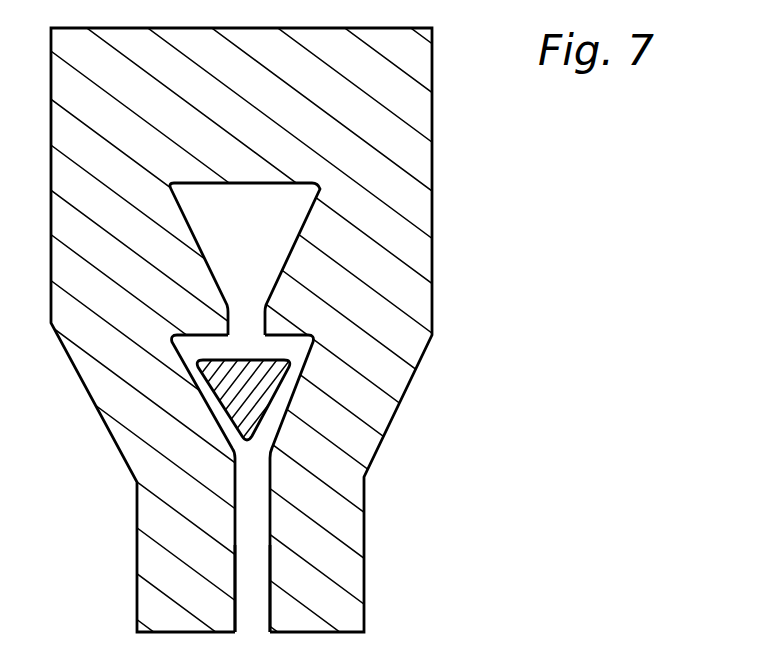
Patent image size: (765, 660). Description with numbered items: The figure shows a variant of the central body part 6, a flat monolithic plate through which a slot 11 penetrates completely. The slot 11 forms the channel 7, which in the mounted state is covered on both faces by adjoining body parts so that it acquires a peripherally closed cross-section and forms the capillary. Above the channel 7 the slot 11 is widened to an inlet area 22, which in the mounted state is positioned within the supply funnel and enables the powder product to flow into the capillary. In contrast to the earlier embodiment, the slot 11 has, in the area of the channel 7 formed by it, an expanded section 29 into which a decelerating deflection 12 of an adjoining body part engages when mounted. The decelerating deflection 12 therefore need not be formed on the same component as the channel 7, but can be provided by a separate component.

The central body part 6 is at (412, 262).
The inlet area 22 is at (263, 244).
The expanded section 29 is at (303, 352).
The decelerating deflection 12 is at (253, 393).
The channel 7 is at (247, 500).
The slot 11 is at (260, 562).